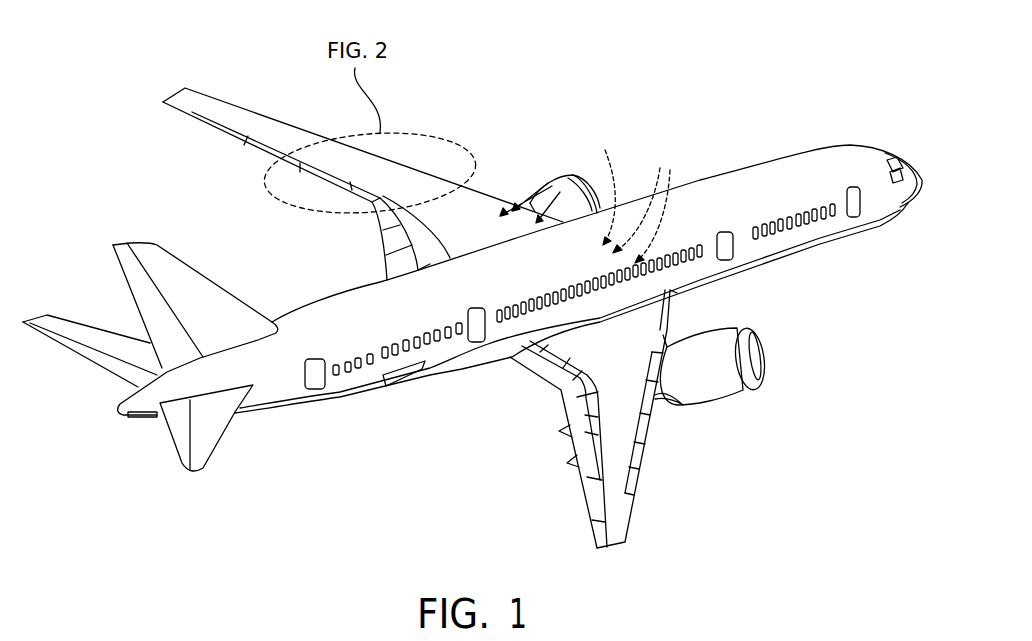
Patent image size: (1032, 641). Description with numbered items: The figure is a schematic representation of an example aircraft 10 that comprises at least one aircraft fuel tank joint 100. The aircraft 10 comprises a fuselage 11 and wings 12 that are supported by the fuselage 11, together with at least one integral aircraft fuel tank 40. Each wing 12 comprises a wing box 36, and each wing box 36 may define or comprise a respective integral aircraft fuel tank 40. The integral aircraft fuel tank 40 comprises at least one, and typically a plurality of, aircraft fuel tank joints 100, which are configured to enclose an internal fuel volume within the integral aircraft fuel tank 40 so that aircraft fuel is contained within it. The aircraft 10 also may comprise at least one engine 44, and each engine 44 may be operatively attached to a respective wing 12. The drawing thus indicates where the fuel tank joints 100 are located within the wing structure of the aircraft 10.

The aircraft 10 is at (596, 48).
The fuselage 11 is at (712, 173).
The wing 12 is at (477, 210).
The wing box 36 is at (397, 177).
The integral aircraft fuel tank 40 is at (592, 177).
The engine 44 is at (565, 172).
The aircraft fuel tank joint 100 is at (505, 196).